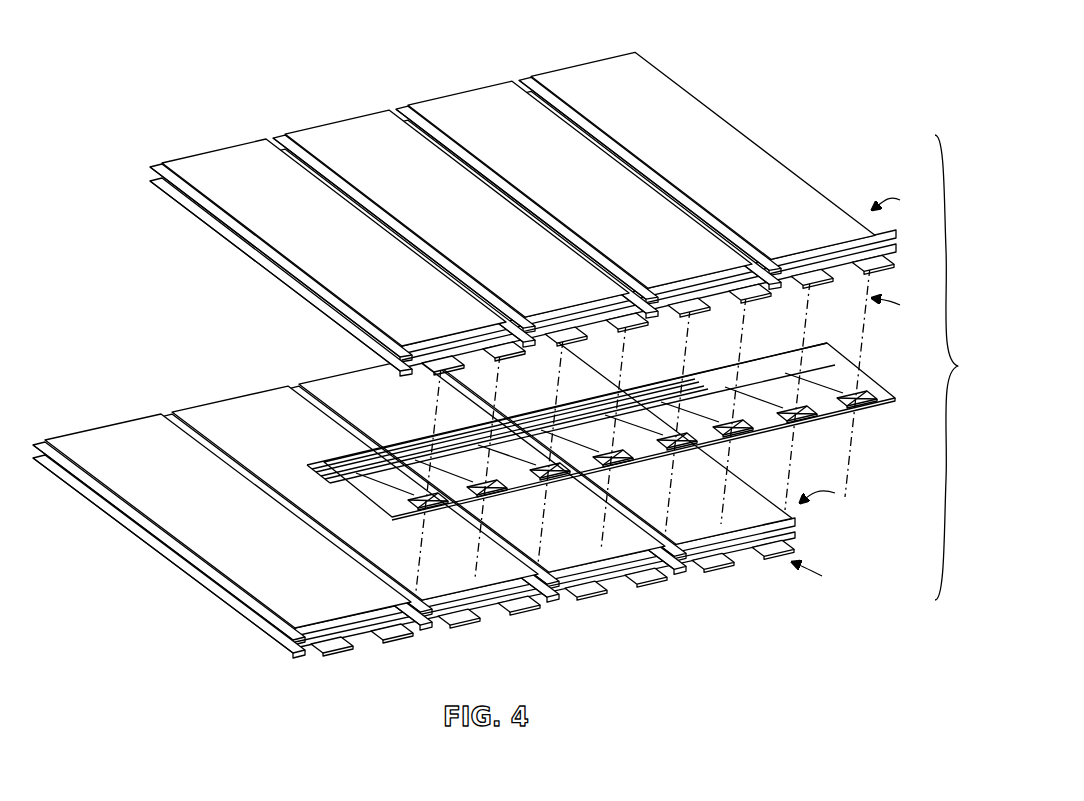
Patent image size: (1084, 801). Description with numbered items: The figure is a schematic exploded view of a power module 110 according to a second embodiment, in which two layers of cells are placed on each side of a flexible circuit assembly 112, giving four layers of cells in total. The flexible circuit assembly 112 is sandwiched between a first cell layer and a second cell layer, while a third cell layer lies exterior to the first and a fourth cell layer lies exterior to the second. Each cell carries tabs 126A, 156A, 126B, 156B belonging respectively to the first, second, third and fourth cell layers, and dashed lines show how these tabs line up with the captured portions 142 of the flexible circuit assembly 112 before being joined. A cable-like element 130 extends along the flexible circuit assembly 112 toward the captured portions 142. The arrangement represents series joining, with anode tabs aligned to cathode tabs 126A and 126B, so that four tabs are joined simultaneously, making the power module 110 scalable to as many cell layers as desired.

The power module 110 is at (495, 330).
The flexible circuit assembly 112 is at (868, 366).
The first tab 126A is at (762, 302).
The first tab 126B is at (770, 300).
The flexible circuit assembly 130 is at (300, 470).
The captured portion 142 is at (810, 415).
The first tab 156A is at (685, 562).
The first tab 156B is at (705, 572).